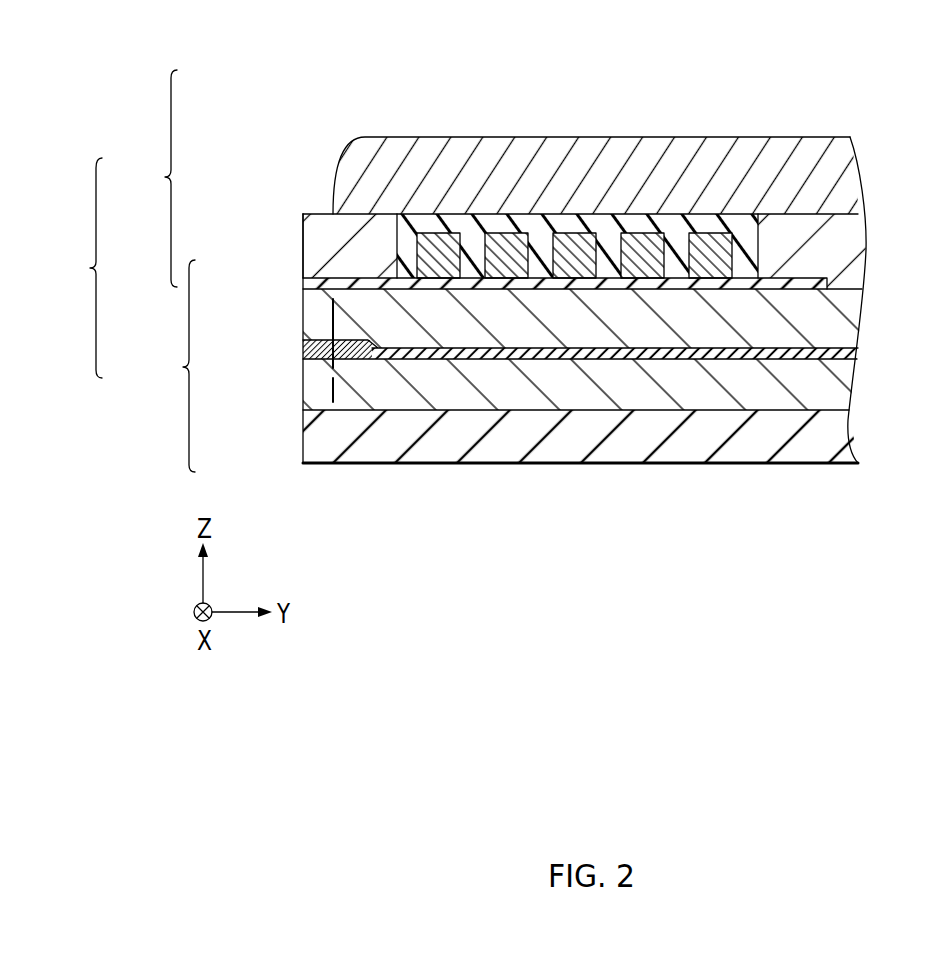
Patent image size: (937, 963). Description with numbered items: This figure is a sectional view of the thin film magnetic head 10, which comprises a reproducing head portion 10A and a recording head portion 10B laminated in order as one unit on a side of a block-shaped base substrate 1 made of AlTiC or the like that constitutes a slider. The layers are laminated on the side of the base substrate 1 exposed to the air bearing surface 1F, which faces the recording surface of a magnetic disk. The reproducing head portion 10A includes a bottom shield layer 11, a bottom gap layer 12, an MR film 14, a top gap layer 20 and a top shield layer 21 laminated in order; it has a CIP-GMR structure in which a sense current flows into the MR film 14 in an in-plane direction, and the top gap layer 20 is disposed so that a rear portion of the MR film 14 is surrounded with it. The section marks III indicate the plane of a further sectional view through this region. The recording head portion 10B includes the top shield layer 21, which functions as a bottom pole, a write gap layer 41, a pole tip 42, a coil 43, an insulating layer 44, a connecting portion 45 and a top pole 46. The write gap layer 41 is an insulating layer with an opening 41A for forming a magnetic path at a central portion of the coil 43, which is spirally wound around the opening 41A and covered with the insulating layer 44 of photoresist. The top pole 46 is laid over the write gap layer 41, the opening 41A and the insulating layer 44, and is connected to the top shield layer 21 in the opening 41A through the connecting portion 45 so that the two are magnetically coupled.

The base substrate 1 is at (302, 447).
The air bearing surface 1F is at (294, 243).
The thin film magnetic head 10 is at (79, 268).
The reproducing head portion 10A is at (162, 366).
The recording head portion 10B is at (144, 178).
The bottom shield layer 11 is at (302, 410).
The bottom gap layer 12 is at (832, 360).
The MR film 14 is at (302, 348).
The top gap layer 20 is at (835, 344).
The top shield layer 21 is at (302, 290).
The write gap layer 41 is at (318, 286).
The opening 41A is at (837, 250).
The pole tip 42 is at (377, 245).
The coil 43 is at (443, 243).
The insulating layer 44 is at (537, 215).
The connecting portion 45 is at (782, 218).
The top pole 46 is at (645, 138).
The section line III is at (326, 307).